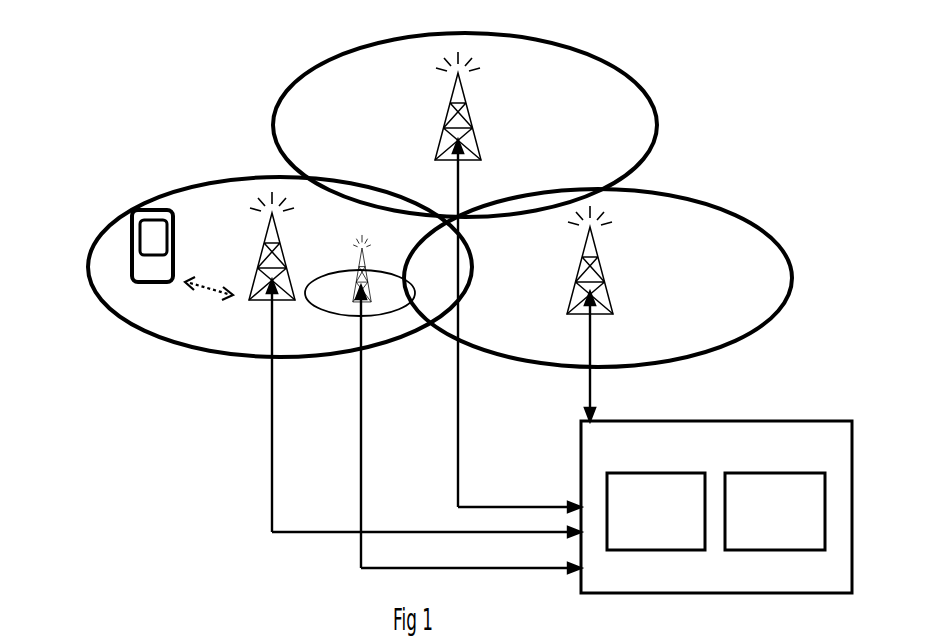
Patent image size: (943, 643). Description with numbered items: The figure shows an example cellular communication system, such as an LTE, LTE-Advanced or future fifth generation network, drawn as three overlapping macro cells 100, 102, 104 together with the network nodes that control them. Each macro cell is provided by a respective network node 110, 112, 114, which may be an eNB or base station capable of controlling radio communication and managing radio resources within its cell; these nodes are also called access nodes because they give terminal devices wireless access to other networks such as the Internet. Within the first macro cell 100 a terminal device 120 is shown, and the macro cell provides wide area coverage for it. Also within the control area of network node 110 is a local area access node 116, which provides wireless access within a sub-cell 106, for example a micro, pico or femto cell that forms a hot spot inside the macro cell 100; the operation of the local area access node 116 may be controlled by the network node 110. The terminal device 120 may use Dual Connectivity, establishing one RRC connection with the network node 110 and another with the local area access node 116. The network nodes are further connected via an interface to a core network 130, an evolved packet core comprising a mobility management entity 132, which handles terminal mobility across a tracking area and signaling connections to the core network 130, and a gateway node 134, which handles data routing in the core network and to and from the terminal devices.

The cell 100 is at (224, 174).
The cell 102 is at (624, 80).
The cell 104 is at (757, 232).
The sub-cell 106 is at (323, 275).
The network node 110 is at (266, 240).
The network node 112 is at (447, 112).
The network node 114 is at (584, 255).
The local area access node 116 is at (362, 256).
The terminal device 120 is at (131, 238).
The core network 130 is at (716, 507).
The mobility management entity 132 is at (656, 511).
The gateway node 134 is at (775, 511).